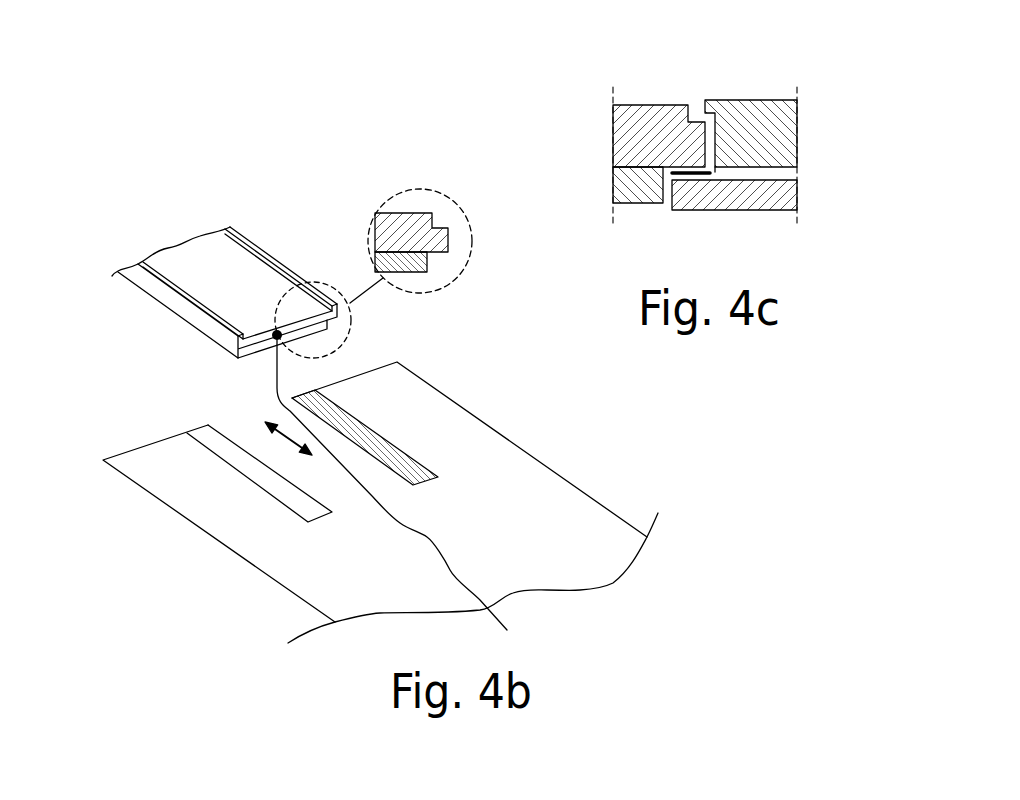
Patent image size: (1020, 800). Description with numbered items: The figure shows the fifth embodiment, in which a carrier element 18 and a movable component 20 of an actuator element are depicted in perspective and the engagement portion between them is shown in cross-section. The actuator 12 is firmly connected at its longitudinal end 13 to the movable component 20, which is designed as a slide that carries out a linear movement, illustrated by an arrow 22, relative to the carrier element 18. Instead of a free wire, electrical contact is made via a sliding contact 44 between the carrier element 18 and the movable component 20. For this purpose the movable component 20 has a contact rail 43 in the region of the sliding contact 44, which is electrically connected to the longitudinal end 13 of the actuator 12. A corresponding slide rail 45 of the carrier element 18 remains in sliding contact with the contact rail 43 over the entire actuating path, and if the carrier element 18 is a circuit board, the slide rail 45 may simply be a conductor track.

In FIG. 4b, the actuator 12 is at (277, 398).
In FIG. 4b, the longitudinal end 13 is at (276, 330).
In FIG. 4b, the carrier element 18 is at (560, 492).
In FIG. 4c, the carrier element 18 is at (772, 208).
In FIG. 4b, the movable component 20 is at (243, 263).
In FIG. 4c, the movable component 20 is at (638, 118).
In FIG. 4b, the arrow 22 is at (270, 447).
In FIG. 4b, the contact rail 43 is at (435, 255).
In FIG. 4c, the contact rail 43 is at (712, 108).
In FIG. 4b, the sliding contact 44 is at (390, 433).
In FIG. 4c, the sliding contact 44 is at (667, 207).
In FIG. 4b, the slide rail 45 is at (190, 431).
In FIG. 4c, the slide rail 45 is at (690, 177).